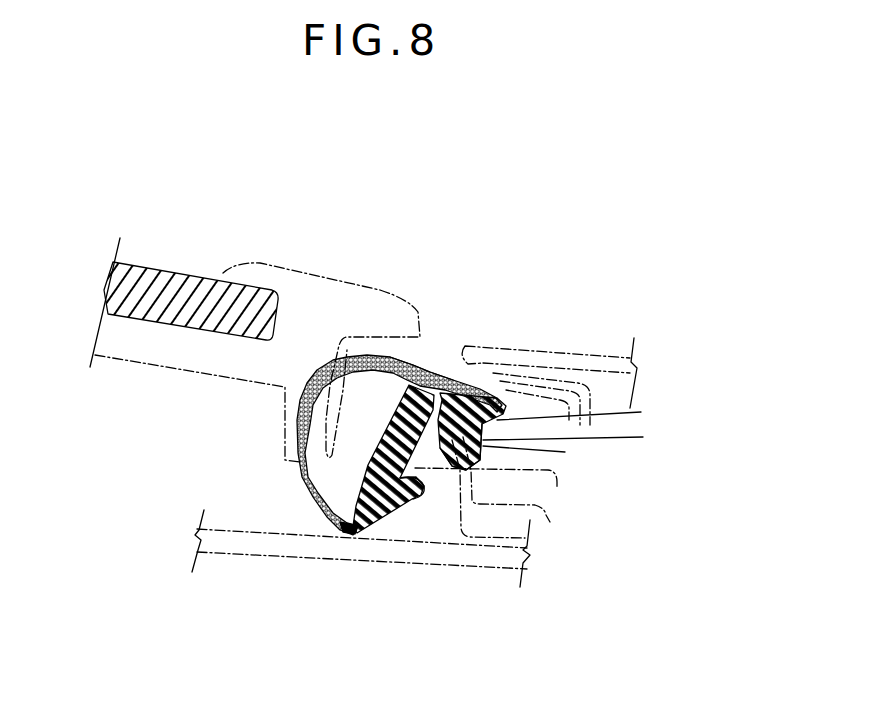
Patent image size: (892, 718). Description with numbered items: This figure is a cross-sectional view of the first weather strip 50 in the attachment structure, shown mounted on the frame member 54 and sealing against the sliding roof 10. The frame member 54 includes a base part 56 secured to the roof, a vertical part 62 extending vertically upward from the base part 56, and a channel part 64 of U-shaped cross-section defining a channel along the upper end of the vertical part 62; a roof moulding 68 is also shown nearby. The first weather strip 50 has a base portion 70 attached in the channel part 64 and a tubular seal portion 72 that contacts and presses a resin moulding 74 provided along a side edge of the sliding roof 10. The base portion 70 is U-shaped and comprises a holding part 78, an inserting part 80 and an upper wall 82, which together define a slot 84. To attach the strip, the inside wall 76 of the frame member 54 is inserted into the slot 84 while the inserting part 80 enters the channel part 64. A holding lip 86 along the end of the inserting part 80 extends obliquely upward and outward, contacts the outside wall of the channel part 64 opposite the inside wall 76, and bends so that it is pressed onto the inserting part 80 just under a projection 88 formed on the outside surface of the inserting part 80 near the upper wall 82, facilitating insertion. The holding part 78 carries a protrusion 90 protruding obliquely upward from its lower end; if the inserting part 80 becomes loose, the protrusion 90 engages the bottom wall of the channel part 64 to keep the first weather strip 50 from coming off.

The sliding roof 10 is at (163, 267).
The first weather strip 50 is at (393, 455).
The frame member 54 is at (229, 551).
The base part 56 is at (503, 550).
The vertical part 62 is at (550, 522).
The channel part 64 is at (557, 489).
The roof moulding 68 is at (567, 352).
The base portion 70 is at (427, 374).
The tubular seal portion 72 is at (319, 508).
The resin moulding 74 is at (330, 273).
The inside wall 76 is at (493, 395).
The holding part 78 is at (378, 532).
The inserting part 80 is at (643, 437).
The upper wall 82 is at (460, 382).
The slot 84 is at (443, 382).
The holding lip 86 is at (565, 452).
The projection 88 is at (641, 412).
The protrusion 90 is at (412, 500).